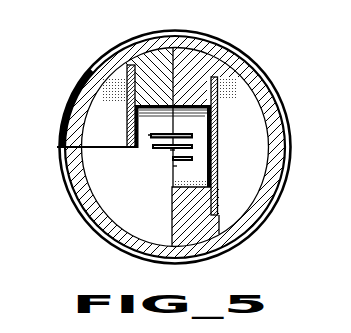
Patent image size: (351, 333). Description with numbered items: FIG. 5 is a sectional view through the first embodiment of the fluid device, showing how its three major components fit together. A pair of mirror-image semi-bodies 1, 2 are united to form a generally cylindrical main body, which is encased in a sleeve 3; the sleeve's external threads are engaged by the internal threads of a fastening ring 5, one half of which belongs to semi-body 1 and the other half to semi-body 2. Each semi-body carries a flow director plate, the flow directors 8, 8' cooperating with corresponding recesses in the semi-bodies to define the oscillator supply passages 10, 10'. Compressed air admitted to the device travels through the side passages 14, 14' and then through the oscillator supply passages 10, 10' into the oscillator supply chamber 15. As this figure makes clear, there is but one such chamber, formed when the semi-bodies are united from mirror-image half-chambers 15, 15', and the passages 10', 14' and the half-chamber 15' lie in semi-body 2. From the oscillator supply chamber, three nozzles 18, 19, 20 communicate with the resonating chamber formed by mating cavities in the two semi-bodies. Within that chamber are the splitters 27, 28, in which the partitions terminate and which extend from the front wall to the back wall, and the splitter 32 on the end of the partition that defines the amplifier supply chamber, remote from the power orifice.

The semi-body 1 is at (147, 72).
The semi-body 2 is at (207, 68).
The sleeve 3 is at (278, 128).
The fastening ring 5 is at (270, 214).
The flow director 8 is at (96, 74).
The flow director 8' is at (249, 75).
The oscillator supply passage 10 is at (120, 123).
The oscillator supply passage 10' is at (233, 146).
The side passage 14 is at (120, 159).
The side passage 14' is at (226, 221).
The oscillator supply chamber 15 is at (88, 106).
The oscillator supply chamber half-chamber 15' is at (232, 146).
The nozzle 18 is at (194, 146).
The nozzle 19 is at (148, 137).
The nozzle 20 is at (195, 157).
The splitter 27 is at (185, 130).
The splitter 28 is at (176, 166).
The splitter 32 is at (176, 149).